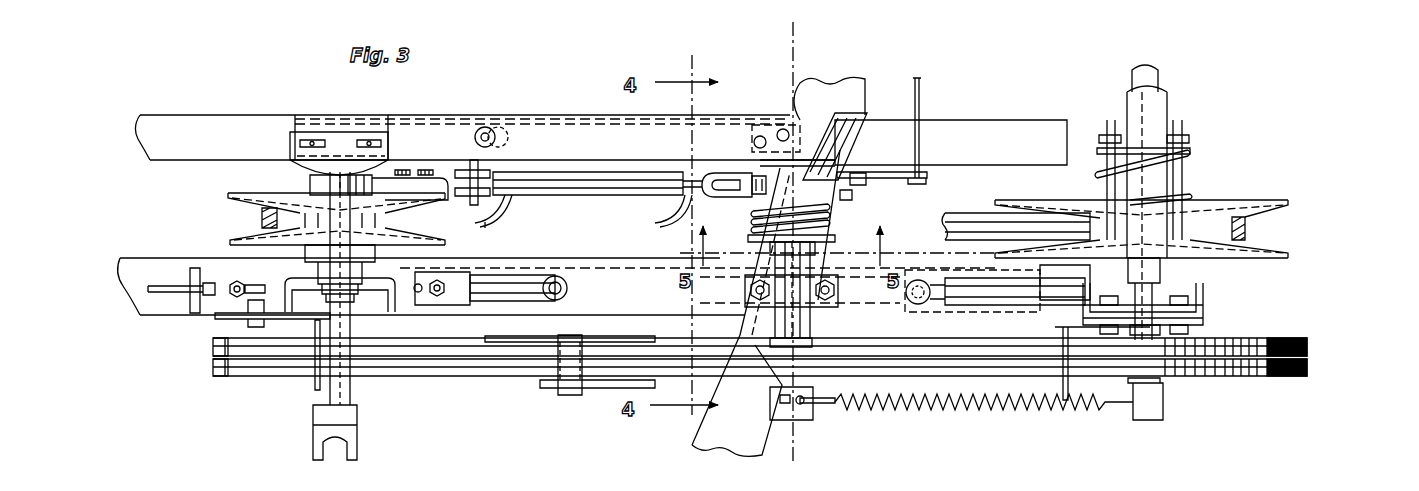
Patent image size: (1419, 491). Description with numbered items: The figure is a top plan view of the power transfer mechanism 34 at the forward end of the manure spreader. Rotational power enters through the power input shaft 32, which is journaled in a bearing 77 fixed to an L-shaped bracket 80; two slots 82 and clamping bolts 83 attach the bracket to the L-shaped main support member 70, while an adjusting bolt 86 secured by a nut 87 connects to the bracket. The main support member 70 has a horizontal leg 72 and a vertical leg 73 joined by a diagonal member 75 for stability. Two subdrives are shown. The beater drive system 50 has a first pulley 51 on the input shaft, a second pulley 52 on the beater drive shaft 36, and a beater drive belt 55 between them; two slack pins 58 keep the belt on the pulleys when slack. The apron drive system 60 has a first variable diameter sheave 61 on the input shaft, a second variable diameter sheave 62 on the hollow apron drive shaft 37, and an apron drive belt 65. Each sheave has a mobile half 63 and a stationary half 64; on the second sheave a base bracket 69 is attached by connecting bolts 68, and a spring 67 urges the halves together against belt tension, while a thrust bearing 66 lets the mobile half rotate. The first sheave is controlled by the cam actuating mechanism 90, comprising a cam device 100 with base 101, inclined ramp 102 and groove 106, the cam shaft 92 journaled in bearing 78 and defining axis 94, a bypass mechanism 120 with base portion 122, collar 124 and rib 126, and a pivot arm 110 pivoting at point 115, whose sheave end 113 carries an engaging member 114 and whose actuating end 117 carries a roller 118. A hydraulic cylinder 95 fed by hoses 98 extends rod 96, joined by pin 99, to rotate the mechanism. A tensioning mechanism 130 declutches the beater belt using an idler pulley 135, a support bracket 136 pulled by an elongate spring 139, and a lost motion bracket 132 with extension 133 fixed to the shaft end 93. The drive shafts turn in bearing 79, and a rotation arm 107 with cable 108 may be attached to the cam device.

The power input shaft 32 is at (350, 395).
The power transfer mechanism 34 is at (1255, 127).
The beater drive shaft 36 is at (1145, 67).
The apron drive shaft 37 is at (1166, 100).
The beater drive system 50 is at (1322, 366).
The first pulley 51 is at (264, 380).
The second pulley 52 is at (1265, 381).
The beater drive belt 55 is at (1308, 353).
The slack pins 58 is at (311, 385).
The apron drive system 60 is at (1292, 218).
The first variable diameter sheave 61 is at (224, 197).
The second variable diameter sheave 62 is at (1278, 250).
The mobile half 63 is at (285, 193).
The stationary half 64 is at (246, 240).
The apron drive belt 65 is at (455, 228).
The thrust bearing 66 is at (372, 177).
The spring 67 is at (1097, 172).
The connecting bolts 68 is at (1107, 122).
The base bracket 69 is at (1150, 147).
The main support member 70 is at (138, 300).
The horizontal leg 72 is at (588, 259).
The vertical leg 73 is at (1203, 314).
The diagonal member 75 is at (526, 275).
The bearing 77 is at (360, 300).
The bearing 78 is at (825, 300).
The bearing 79 is at (1165, 305).
The L-shaped bracket 80 is at (192, 302).
The slots 82 is at (227, 270).
The clamping bolts 83 is at (233, 287).
The adjusting bolt 86 is at (149, 285).
The nut 87 is at (193, 282).
The cam actuating mechanism 90 is at (869, 58).
The cam shaft 92 is at (800, 418).
The end 93 is at (830, 420).
The axis 94 is at (795, 32).
The hydraulic cylinder 95 is at (600, 198).
The hydraulic cylinder rod 96 is at (691, 168).
The hydraulic hoses 98 is at (490, 225).
The pin 99 is at (751, 156).
The cam device 100 is at (863, 122).
The base 101 is at (840, 170).
The inclined ramp 102 is at (800, 115).
The groove 106 is at (840, 160).
The rotation arm 107 is at (912, 180).
The cable 108 is at (920, 100).
The pivot arm 110 is at (576, 115).
The sheave end 113 is at (360, 115).
The engaging member 114 is at (291, 148).
The pivot point 115 is at (485, 128).
The actuating end 117 is at (777, 112).
The roller 118 is at (782, 118).
The bypass mechanism 120 is at (852, 220).
The base portion 122 is at (835, 240).
The collar 124 is at (850, 196).
The rib 126 is at (860, 184).
The tensioning mechanism 130 is at (545, 410).
The lost motion bracket 132 is at (736, 395).
The extension 133 is at (760, 407).
The idler pulley 135 is at (518, 385).
The support bracket 136 is at (610, 398).
The elongate spring 139 is at (940, 418).